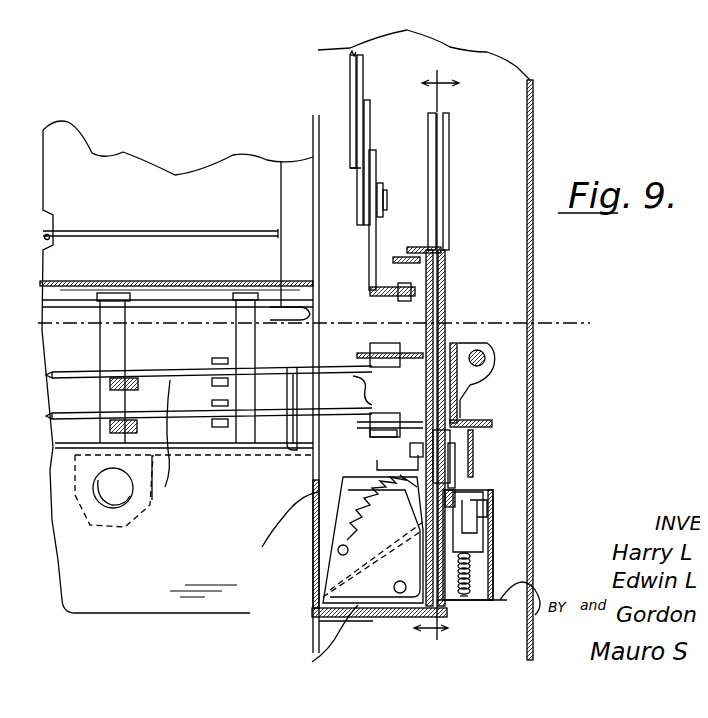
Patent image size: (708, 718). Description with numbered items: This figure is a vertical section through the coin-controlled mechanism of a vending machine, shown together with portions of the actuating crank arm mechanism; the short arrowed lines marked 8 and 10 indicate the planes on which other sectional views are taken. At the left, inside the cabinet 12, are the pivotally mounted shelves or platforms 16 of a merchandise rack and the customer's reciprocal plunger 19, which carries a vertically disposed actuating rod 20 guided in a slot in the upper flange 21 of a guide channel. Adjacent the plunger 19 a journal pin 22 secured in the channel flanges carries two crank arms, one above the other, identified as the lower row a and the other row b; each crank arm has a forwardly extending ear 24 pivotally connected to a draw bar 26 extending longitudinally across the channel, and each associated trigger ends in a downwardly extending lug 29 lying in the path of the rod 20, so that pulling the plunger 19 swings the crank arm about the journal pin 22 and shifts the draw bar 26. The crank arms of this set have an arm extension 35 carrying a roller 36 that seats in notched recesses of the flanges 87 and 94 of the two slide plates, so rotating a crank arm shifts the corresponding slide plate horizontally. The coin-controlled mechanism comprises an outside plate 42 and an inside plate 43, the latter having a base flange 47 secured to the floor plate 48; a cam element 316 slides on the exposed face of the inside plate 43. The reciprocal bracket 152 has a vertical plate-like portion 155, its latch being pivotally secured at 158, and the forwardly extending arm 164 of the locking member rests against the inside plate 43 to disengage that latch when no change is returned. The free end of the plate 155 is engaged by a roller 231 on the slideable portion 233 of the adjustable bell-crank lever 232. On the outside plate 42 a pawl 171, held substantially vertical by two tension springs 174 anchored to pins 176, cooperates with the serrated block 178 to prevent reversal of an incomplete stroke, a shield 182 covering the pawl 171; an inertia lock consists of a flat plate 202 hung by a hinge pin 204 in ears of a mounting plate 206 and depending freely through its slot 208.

The section line 8- 8 is at (436, 367).
The section line 10- 10 is at (60, 310).
The cabinet 12 is at (533, 148).
The shelves or platforms 16 is at (158, 233).
The reciprocal plunger 19 is at (113, 508).
The actuating rod 20 is at (118, 295).
The upper flange 21 is at (75, 305).
The journal pin 22 is at (241, 293).
The forwardly extending ear 24 is at (273, 417).
The draw bar 26 is at (168, 442).
The downwardly extending lug 29 is at (120, 430).
The arm extension 35 is at (350, 390).
The knob or roller 36 is at (372, 413).
The outside plate 42 is at (450, 300).
The inside plate 43 is at (442, 118).
The base flange 47 is at (318, 640).
The floor plate 48 is at (390, 617).
The flange 87 is at (360, 447).
The flange 94 is at (362, 355).
The bracket 152 is at (367, 288).
The plate-like portion 155 is at (377, 160).
The latch pivot 158 is at (398, 300).
The forwardly extending arm 164 is at (405, 240).
The pawl 171 is at (493, 500).
The tension springs 174 is at (464, 603).
The pins 176 is at (470, 600).
The block 178 is at (480, 483).
The cover plate or shield 182 is at (535, 615).
The flat plate 202 is at (460, 455).
The hinge pin 204 is at (490, 352).
The mounting plate 206 is at (455, 340).
The slot 208 is at (470, 418).
The roller 231 is at (384, 188).
The bell-crank lever 232 is at (345, 107).
The slideable portion 233 is at (365, 84).
The cam element 316 is at (380, 455).
The lower row of crank arms and triggers a is at (58, 419).
The other row of crank arms and triggers b is at (58, 378).